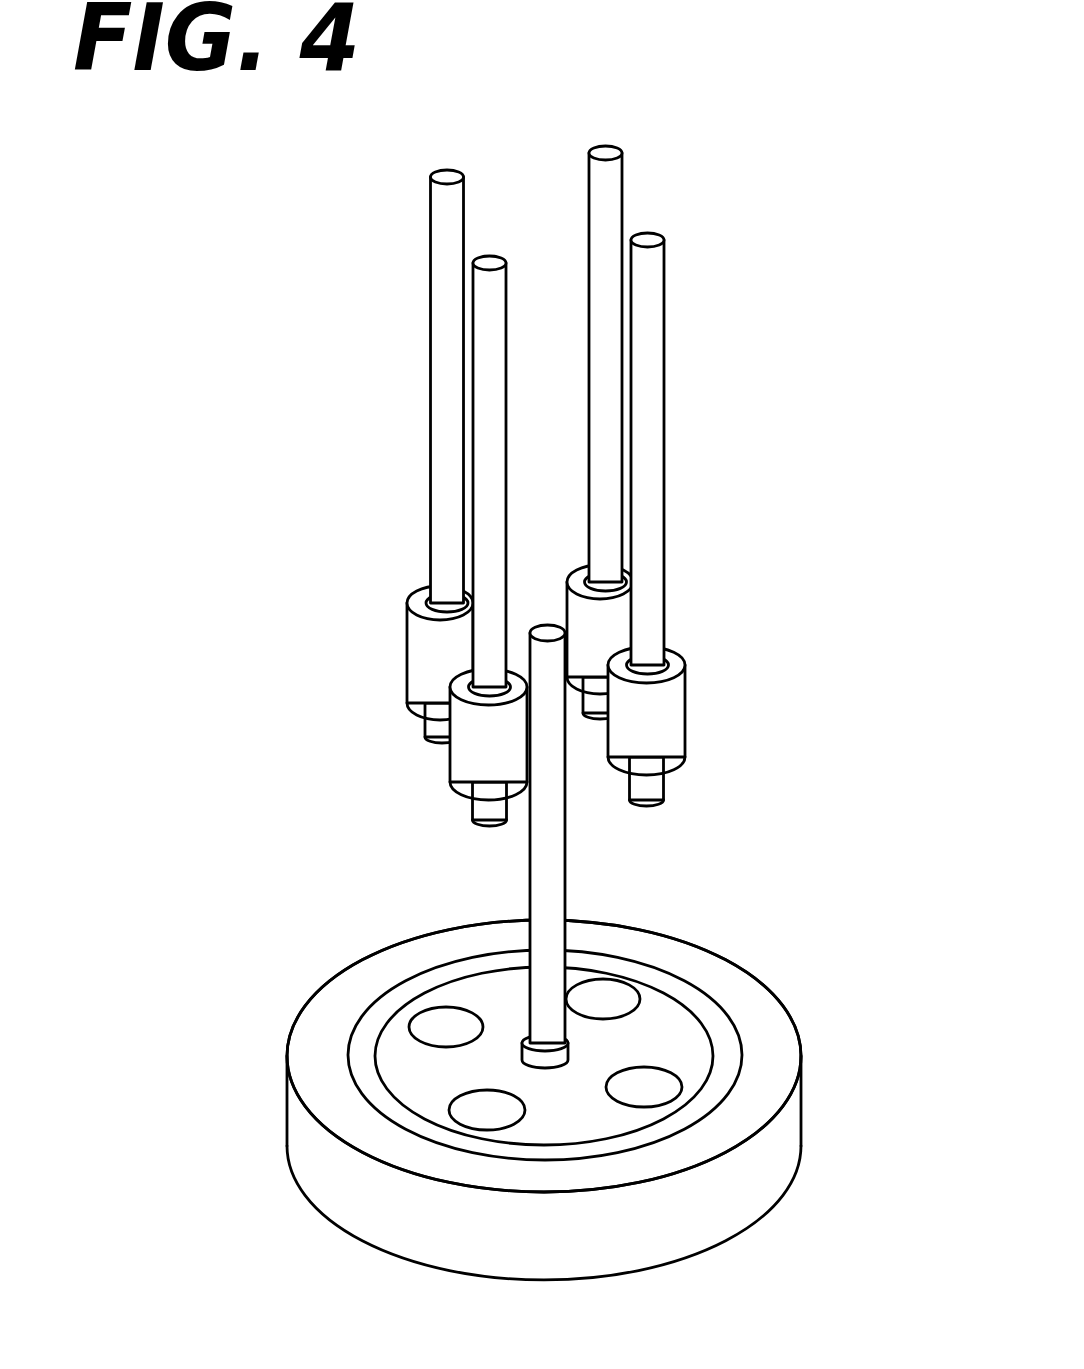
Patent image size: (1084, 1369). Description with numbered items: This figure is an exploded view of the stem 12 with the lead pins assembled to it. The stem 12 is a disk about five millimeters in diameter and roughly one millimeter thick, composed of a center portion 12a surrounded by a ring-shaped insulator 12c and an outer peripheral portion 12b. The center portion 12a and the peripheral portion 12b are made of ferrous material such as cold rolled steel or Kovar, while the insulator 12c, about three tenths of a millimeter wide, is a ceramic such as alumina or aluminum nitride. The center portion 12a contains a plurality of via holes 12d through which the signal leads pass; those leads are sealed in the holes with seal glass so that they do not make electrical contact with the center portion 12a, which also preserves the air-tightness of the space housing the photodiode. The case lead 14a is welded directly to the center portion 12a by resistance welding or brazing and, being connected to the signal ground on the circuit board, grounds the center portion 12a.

The stem 12 is at (772, 1240).
The center portion 12a is at (690, 1042).
The peripheral portion 12b is at (770, 1002).
The insulator 12c is at (703, 988).
The via holes 12d is at (467, 1107).
The case lead 14a is at (537, 873).